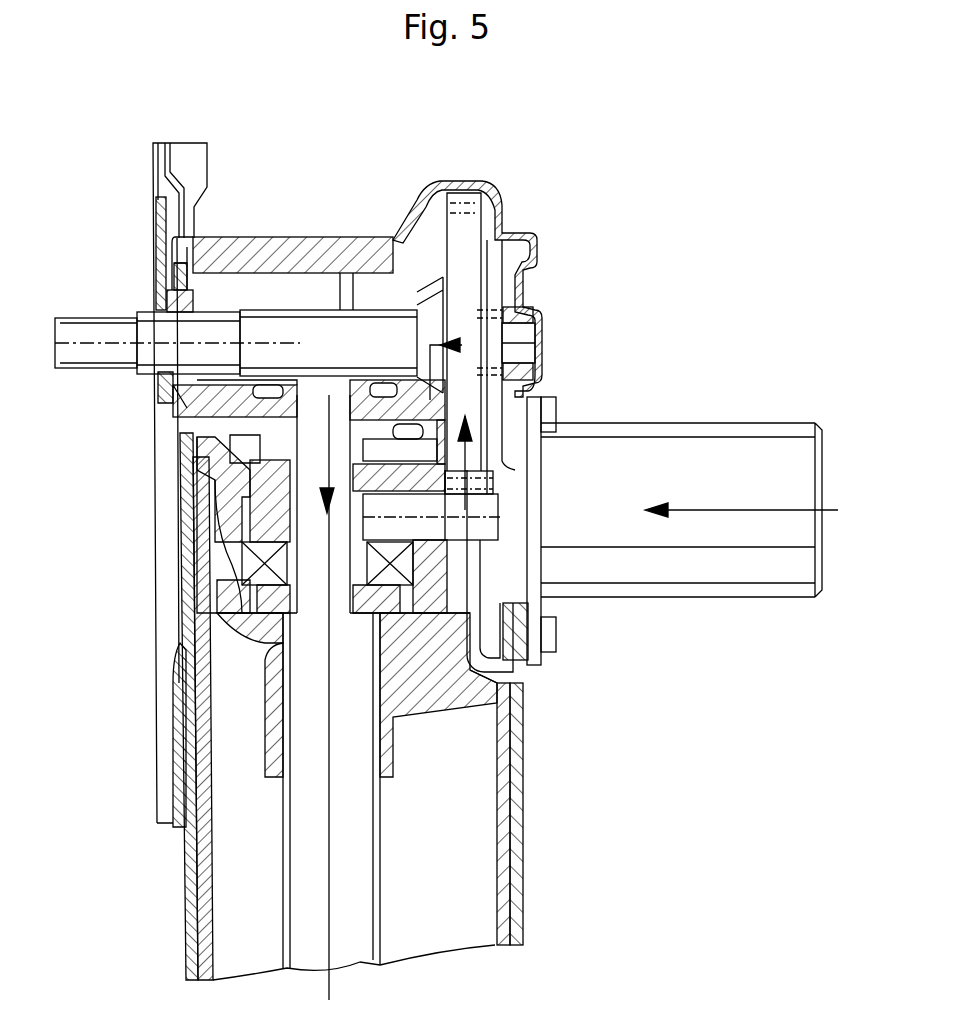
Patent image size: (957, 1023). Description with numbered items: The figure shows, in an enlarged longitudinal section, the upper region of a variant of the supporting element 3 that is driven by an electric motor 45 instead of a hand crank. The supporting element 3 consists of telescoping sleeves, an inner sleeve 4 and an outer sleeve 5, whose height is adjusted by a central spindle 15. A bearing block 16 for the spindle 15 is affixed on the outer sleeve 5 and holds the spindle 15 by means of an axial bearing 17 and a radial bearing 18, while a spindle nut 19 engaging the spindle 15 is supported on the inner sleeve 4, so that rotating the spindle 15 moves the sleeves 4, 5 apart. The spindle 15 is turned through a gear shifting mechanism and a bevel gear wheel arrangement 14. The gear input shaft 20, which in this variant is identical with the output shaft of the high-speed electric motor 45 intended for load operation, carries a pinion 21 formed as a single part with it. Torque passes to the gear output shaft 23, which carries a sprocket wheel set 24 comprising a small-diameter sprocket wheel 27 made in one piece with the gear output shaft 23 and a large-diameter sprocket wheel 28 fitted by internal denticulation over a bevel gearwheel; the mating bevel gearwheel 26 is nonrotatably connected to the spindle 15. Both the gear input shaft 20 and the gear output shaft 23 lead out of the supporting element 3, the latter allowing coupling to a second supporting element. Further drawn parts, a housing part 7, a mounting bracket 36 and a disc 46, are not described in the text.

The supporting element 3 is at (158, 851).
The inner sleeve 4 is at (205, 948).
The outer sleeve 5 is at (190, 910).
The housing part 7 is at (176, 760).
The bevel gear wheel arrangement 14 is at (440, 380).
The spindle 15 is at (308, 653).
The bearing block 16 is at (225, 450).
The axial bearing 17 is at (250, 563).
The radial bearing 18 is at (278, 513).
The spindle nut 19 is at (268, 707).
The gear input shaft 20 is at (420, 512).
The pinion 21 is at (480, 478).
The gear output shaft 23 is at (152, 330).
The sprocket wheel set 24 is at (425, 268).
The bevel gearwheel 26 is at (225, 410).
The small-diameter sprocket wheel 27 is at (513, 272).
The large-diameter sprocket wheel 28 is at (468, 225).
The mounting bracket 36 is at (165, 295).
The electric motor 45 is at (693, 458).
The disc 46 is at (530, 290).